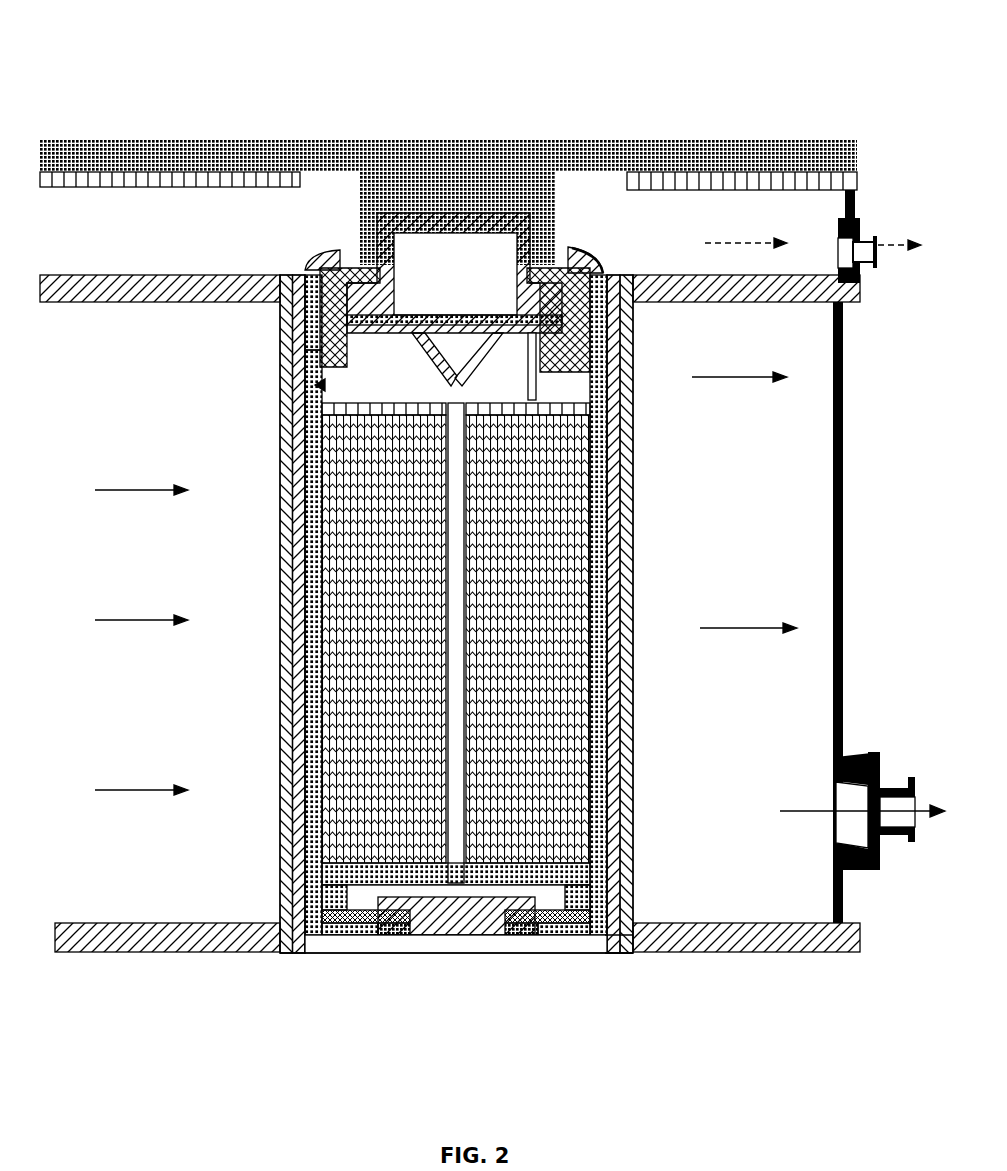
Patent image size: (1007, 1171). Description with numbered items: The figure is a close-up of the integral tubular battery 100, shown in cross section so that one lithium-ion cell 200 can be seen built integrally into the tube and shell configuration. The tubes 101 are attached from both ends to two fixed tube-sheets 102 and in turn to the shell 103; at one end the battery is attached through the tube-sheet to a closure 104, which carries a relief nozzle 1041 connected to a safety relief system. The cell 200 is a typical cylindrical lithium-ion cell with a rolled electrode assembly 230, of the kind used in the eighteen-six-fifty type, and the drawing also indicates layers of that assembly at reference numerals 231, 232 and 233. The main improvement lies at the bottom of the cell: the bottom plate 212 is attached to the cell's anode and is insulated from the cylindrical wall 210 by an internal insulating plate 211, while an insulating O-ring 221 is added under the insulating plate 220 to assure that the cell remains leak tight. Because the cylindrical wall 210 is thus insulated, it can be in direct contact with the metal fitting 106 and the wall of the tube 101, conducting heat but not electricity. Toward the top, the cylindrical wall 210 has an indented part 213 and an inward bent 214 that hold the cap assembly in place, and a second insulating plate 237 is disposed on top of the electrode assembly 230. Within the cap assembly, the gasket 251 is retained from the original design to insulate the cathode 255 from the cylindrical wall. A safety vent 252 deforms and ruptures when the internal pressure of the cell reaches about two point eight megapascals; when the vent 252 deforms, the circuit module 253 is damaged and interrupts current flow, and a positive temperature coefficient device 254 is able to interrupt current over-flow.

The integral tubular battery 100 is at (66, 112).
The cell 200 is at (596, 240).
The tube 101 is at (633, 953).
The tube-sheet 102 is at (737, 293).
The shell 103 is at (838, 475).
The closure 104 is at (862, 202).
The relief nozzle 1041 is at (865, 262).
The metal fitting 106 is at (607, 940).
The cylindrical wall 210 is at (585, 940).
The internal insulating plate 211 is at (515, 937).
The bottom plate 212 is at (446, 936).
The indented part 213 is at (290, 400).
The inward bent 214 is at (325, 260).
The insulating plate 220 is at (590, 880).
The insulating O-ring 221 is at (590, 897).
The rolled electrode assembly 230 is at (592, 446).
The first filter layer 231 is at (584, 469).
The outer wall of filter 232 is at (612, 508).
The second filter layer 233 is at (580, 484).
The second insulating plate 237 is at (585, 410).
The gasket 251 is at (330, 295).
The safety vent 252 is at (497, 342).
The circuit module 253 is at (315, 352).
The positive temperature coefficient device 254 is at (312, 330).
The cathode 255 is at (378, 228).